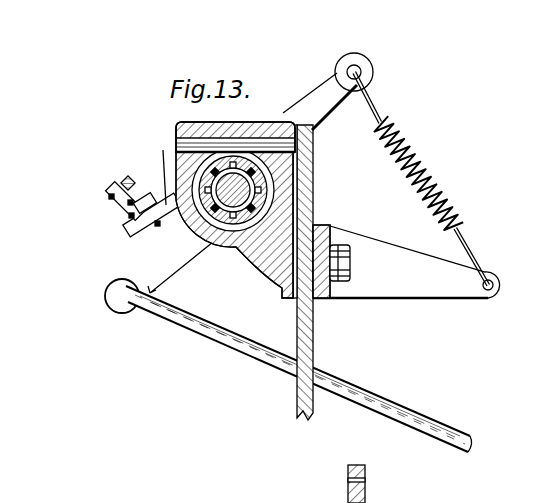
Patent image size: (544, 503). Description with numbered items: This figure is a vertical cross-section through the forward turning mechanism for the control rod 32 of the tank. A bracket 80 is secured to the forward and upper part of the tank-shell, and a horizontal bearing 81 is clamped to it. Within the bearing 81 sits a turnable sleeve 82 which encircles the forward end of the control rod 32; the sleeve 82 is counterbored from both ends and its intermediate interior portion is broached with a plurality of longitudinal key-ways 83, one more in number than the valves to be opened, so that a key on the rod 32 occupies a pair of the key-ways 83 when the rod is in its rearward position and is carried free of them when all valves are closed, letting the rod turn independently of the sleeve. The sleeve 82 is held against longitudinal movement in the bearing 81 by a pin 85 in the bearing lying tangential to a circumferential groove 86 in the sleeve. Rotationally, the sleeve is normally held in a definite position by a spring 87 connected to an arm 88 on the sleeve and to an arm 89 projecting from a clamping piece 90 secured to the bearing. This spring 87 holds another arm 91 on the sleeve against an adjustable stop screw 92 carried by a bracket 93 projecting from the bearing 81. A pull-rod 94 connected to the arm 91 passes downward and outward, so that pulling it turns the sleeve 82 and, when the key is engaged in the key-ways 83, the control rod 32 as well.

The control rod 32 is at (200, 173).
The bracket 80 is at (316, 333).
The horizontal bearing 81 is at (290, 194).
The turnable sleeve 82 is at (219, 228).
The key-ways 83 is at (257, 241).
The pin 85 is at (176, 140).
The circumferential groove 86 is at (298, 166).
The spring 87 is at (433, 163).
The arm 88 is at (313, 93).
The arm 89 is at (442, 298).
The clamping piece 90 is at (332, 232).
The arm 91 is at (137, 262).
The adjustable stop screw 92 is at (125, 231).
The bracket 93 is at (133, 237).
The pull-rod 94 is at (405, 399).